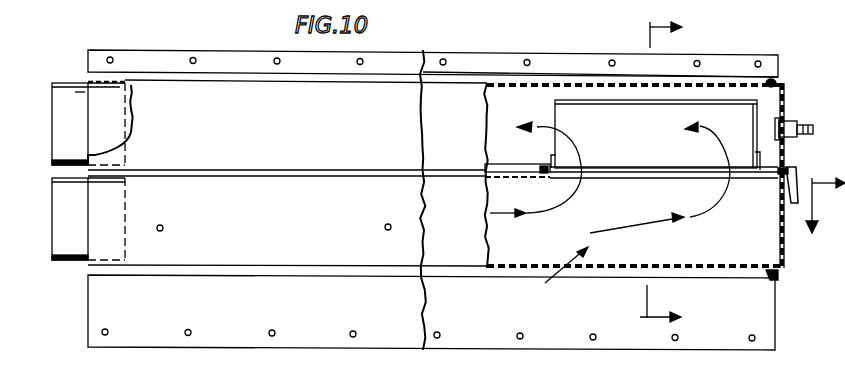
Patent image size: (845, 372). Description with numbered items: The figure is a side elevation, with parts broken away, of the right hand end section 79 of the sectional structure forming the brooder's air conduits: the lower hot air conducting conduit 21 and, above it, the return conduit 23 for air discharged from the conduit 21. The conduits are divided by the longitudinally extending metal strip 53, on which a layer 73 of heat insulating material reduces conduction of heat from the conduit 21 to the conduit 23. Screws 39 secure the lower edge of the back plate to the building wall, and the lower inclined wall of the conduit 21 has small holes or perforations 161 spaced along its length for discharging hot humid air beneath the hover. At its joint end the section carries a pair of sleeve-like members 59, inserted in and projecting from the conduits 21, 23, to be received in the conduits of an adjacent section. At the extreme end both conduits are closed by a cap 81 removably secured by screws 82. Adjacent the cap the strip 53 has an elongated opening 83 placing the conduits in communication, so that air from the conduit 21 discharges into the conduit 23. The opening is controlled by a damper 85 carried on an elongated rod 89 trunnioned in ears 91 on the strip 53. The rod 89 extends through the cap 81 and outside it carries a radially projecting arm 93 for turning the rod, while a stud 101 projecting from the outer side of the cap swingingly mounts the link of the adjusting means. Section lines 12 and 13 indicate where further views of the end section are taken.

The hot air conducting conduit 21 is at (547, 281).
The return conduit 23 is at (511, 104).
The screws 39 is at (580, 60).
The longitudinally extending metal strip 53 is at (495, 178).
The sleeve-like members 59 is at (69, 80).
The layer of heat insulating material 73 is at (503, 164).
The right hand end section 79 is at (460, 51).
The cap 81 is at (786, 103).
The screws 82 is at (780, 82).
The elongated opening 83 is at (645, 178).
The damper 85 is at (556, 113).
The elongated rod 89 is at (660, 168).
The ears 91 is at (552, 166).
The radially projecting arm 93 is at (800, 190).
The stud 101 is at (797, 122).
The holes or perforations 161 is at (162, 225).
The section line FIG. 12 is at (675, 177).
The third floor 13 is at (822, 219).